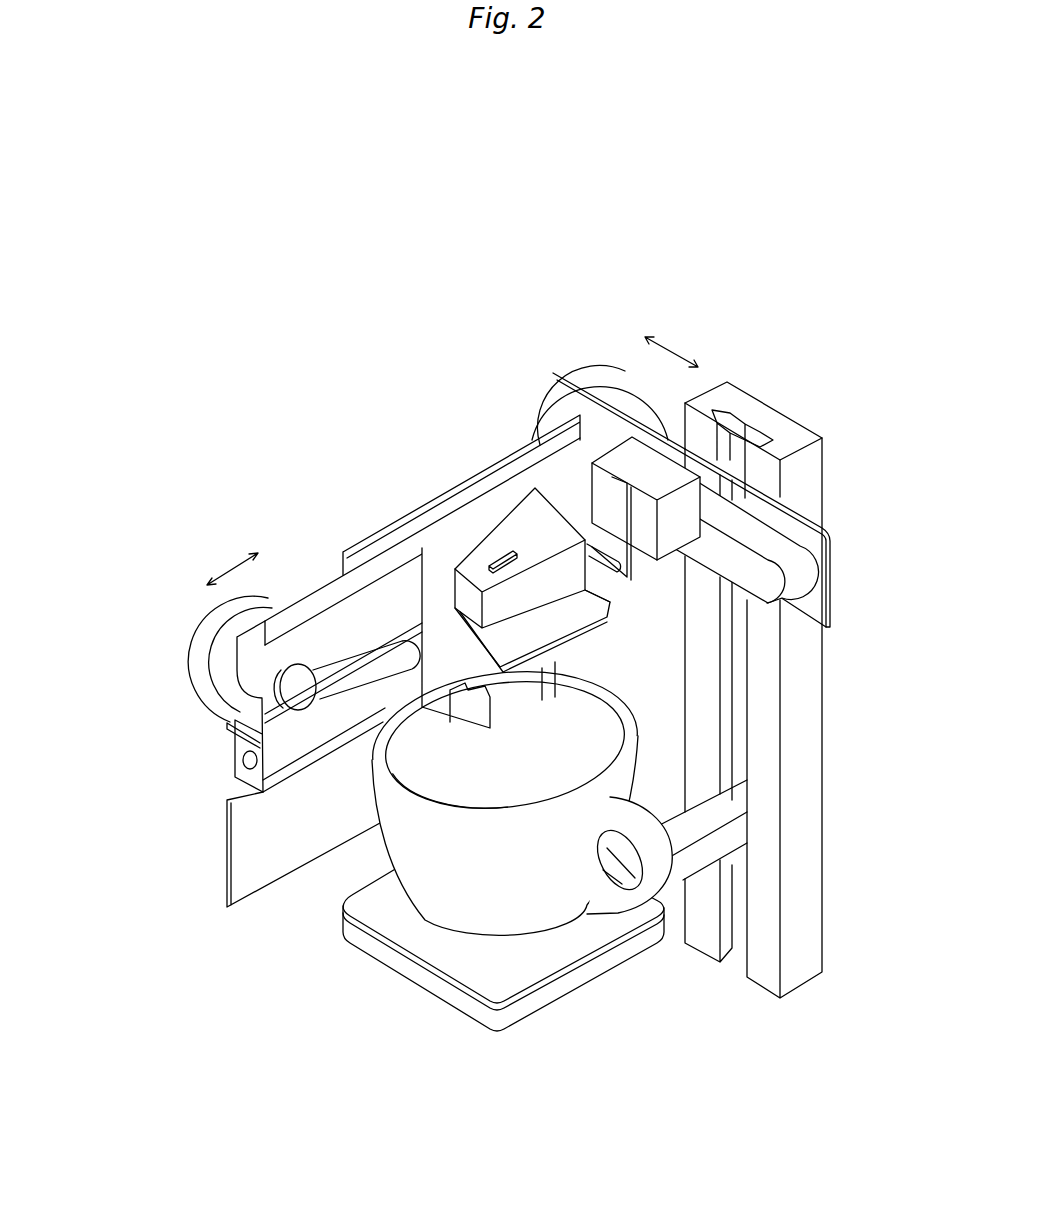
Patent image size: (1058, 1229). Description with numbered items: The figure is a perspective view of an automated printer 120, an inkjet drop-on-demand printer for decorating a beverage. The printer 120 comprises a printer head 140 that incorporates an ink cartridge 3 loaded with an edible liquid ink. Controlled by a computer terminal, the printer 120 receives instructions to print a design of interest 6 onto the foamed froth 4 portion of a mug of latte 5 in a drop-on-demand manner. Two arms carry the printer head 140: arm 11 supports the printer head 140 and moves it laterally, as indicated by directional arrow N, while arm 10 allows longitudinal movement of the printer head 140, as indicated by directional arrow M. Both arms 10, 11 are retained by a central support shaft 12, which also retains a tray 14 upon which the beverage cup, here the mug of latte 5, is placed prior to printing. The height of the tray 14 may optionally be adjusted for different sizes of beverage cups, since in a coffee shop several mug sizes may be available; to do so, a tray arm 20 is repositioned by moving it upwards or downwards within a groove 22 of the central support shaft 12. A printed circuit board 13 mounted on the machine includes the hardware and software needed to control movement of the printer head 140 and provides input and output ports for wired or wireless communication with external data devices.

The automated printer 120 is at (273, 1078).
The printer head 140 is at (487, 527).
The ink cartridge 3 is at (520, 614).
The arm 11 is at (265, 668).
The printed circuit board 13 is at (265, 836).
The tray 14 is at (355, 928).
The arm 10 is at (762, 578).
The central support shaft 12 is at (799, 709).
The tray arm 20 is at (736, 832).
The groove 22 is at (740, 905).
The foamed froth 4 is at (505, 782).
The mug of latte 5 is at (553, 867).
The design of interest 6 is at (455, 782).